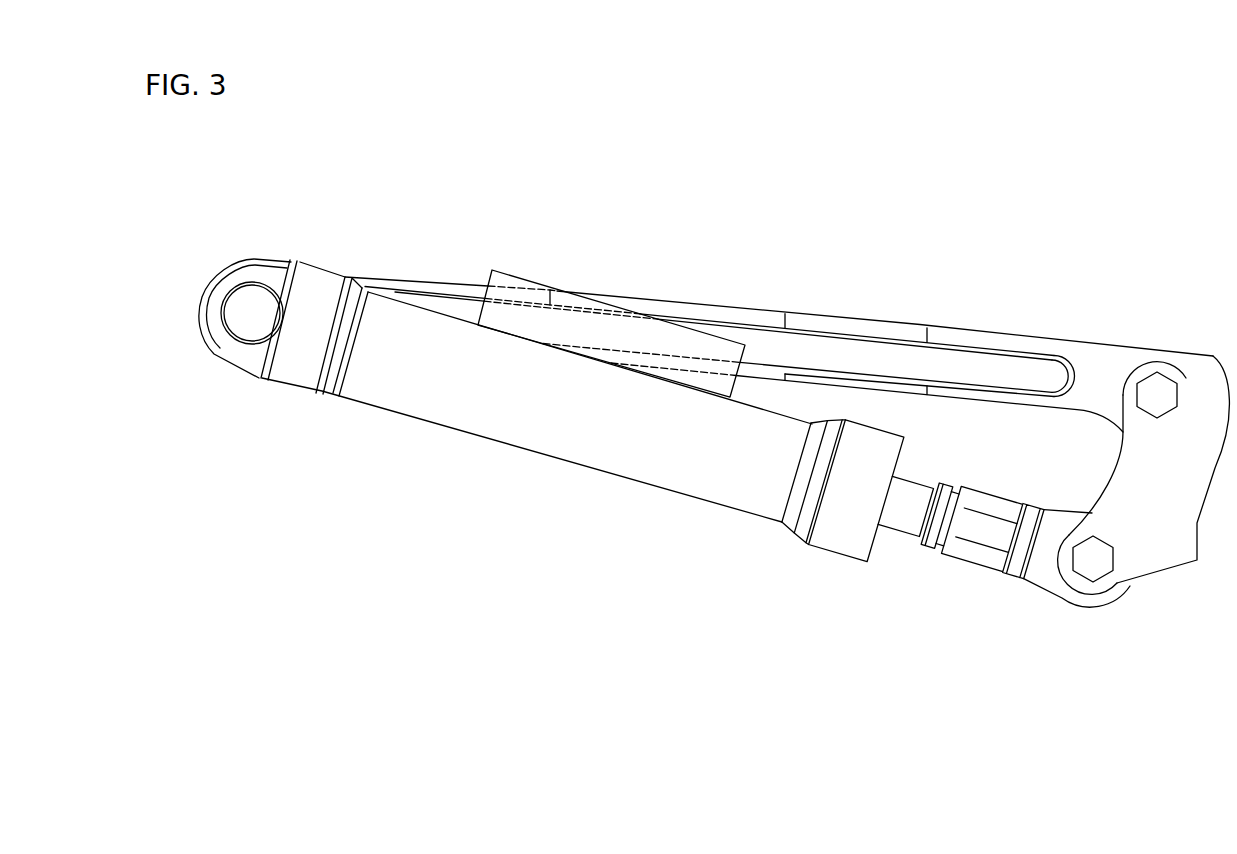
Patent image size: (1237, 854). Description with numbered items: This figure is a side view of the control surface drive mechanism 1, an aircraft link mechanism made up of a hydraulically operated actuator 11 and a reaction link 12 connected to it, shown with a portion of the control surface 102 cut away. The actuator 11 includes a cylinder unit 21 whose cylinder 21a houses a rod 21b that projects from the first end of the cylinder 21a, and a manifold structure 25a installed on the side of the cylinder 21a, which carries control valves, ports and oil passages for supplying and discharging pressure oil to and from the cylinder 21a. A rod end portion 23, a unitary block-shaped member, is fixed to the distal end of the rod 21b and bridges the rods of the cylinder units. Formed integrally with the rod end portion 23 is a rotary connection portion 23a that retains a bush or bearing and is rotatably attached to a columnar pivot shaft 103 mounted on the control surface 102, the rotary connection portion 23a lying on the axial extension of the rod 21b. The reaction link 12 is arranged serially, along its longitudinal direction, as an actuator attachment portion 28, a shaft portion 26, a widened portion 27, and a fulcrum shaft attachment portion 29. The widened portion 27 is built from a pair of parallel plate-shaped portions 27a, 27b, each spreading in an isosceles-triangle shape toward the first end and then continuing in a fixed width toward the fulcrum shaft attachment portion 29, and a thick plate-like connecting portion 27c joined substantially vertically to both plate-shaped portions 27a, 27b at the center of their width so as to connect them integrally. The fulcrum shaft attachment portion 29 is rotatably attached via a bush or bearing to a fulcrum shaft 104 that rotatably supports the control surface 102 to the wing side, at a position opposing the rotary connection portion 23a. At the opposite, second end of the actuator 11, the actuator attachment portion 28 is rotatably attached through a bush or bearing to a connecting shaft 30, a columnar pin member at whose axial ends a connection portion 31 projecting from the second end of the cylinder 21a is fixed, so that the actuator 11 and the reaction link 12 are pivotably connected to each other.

The control surface drive mechanism 1 is at (317, 429).
The actuator 11 is at (525, 452).
The reaction link 12 is at (779, 393).
The cylinder unit 21 is at (633, 503).
The cylinder 21a is at (447, 395).
The rod 21b is at (912, 513).
The rod end portion 23 is at (990, 537).
The rotary connection portion 23a is at (1113, 598).
The manifold structure 25a is at (505, 268).
The shaft portion 26 is at (441, 278).
The widened portion 27 is at (779, 393).
The plate-shaped portion 27a is at (922, 330).
The plate-shaped portion 27b is at (812, 380).
The connecting portion 27c is at (908, 365).
The actuator attachment portion 28 is at (255, 260).
The fulcrum shaft attachment portion 29 is at (1163, 353).
The connecting shaft 30 is at (239, 324).
The connection portion 31 is at (258, 360).
The control surface 102 is at (1170, 548).
The pivot shaft 103 is at (1093, 560).
The fulcrum shaft 104 is at (1155, 392).